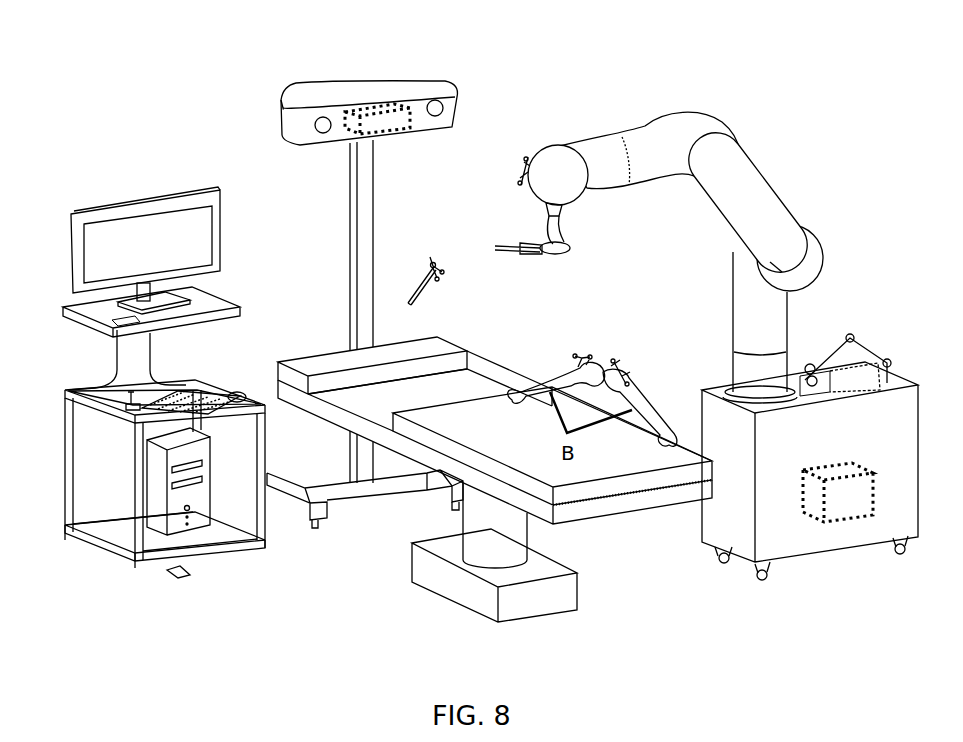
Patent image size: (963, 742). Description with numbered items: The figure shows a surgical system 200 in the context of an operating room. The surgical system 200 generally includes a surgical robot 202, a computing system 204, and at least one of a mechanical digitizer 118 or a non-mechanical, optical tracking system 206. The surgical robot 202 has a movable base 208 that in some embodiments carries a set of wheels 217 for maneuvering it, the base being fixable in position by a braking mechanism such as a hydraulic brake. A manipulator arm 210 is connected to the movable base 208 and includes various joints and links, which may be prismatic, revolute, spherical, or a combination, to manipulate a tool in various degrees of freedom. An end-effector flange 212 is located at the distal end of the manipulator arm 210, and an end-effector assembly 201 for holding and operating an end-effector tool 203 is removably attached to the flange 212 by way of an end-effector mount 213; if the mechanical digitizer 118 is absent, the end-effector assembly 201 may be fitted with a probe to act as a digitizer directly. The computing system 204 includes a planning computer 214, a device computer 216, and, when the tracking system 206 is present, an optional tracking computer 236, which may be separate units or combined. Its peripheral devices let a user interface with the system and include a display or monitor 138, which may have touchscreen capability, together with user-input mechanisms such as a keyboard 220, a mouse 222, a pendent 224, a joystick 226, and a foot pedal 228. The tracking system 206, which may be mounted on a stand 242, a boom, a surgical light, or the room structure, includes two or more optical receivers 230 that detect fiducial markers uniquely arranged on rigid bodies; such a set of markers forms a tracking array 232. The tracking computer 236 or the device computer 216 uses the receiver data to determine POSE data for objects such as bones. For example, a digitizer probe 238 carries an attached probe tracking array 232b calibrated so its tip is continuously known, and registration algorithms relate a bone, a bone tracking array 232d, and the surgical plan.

The surgical system 200 is at (141, 79).
The tracking system 206 is at (261, 124).
The optical receivers 230 is at (327, 122).
The tracking computer 236 is at (394, 126).
The stand 242 is at (353, 250).
The monitor 138 is at (138, 207).
The pendent 224 is at (115, 323).
The computing system 204 is at (95, 479).
The planning computer 214 is at (197, 530).
The keyboard 220 is at (182, 394).
The mouse 222 is at (232, 392).
The joystick 226 is at (127, 415).
The foot pedal 228 is at (183, 576).
The movable base 208 is at (698, 513).
The probe tracking array 232b is at (430, 256).
The digitizer probe 238 is at (418, 290).
The tracking array 232 is at (526, 160).
The tracking array 232d is at (625, 373).
The surgical robot 202 is at (818, 433).
The wheels 217 is at (760, 570).
The device computer 216 is at (847, 522).
The mechanical digitizer 118 is at (876, 321).
The manipulator arm 210 is at (758, 195).
The end-effector flange 212 is at (542, 207).
The end-effector mount 213 is at (552, 217).
The end-effector assembly 201 is at (560, 252).
The end-effector tool 203 is at (505, 252).